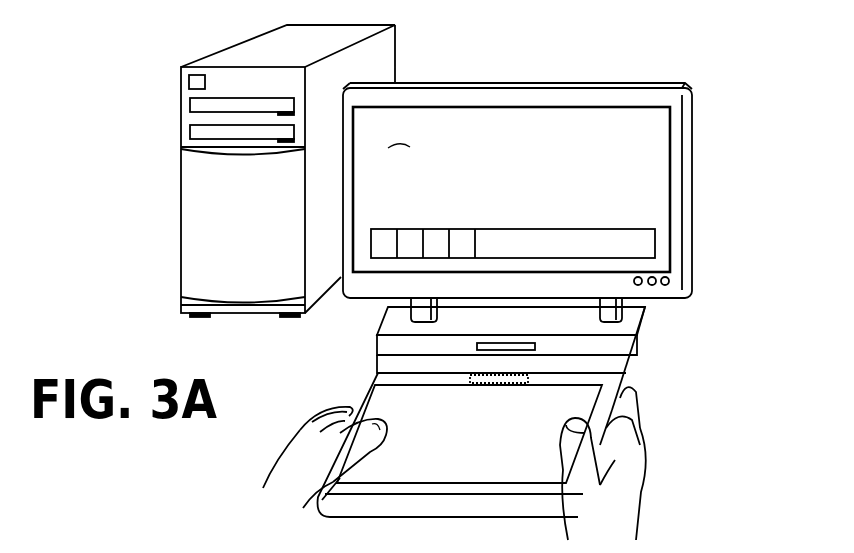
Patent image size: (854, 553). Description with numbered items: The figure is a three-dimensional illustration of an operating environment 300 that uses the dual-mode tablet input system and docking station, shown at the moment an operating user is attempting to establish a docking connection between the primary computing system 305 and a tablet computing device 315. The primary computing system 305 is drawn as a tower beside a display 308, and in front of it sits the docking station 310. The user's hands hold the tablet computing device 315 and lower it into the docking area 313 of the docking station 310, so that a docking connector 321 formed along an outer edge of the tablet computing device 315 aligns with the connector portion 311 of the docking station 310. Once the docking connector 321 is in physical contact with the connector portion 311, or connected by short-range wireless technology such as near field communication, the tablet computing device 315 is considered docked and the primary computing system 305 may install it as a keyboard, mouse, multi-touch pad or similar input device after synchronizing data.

The computing system 300 is at (116, 46).
The primary computing system 305 is at (393, 46).
The display monitor 308 is at (687, 102).
The docking station 310 is at (645, 328).
The connector portion 311 is at (495, 348).
The docking area 313 is at (388, 358).
The tablet computing device 315 is at (366, 395).
The docking connector 321 is at (490, 381).